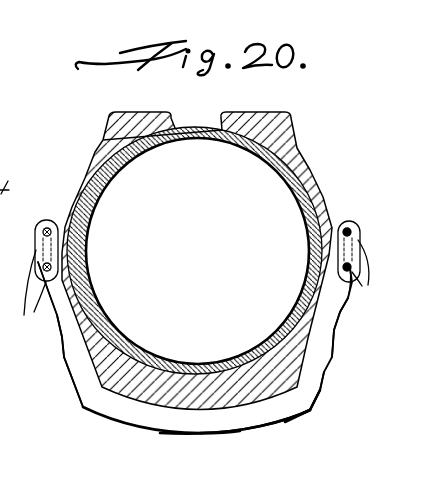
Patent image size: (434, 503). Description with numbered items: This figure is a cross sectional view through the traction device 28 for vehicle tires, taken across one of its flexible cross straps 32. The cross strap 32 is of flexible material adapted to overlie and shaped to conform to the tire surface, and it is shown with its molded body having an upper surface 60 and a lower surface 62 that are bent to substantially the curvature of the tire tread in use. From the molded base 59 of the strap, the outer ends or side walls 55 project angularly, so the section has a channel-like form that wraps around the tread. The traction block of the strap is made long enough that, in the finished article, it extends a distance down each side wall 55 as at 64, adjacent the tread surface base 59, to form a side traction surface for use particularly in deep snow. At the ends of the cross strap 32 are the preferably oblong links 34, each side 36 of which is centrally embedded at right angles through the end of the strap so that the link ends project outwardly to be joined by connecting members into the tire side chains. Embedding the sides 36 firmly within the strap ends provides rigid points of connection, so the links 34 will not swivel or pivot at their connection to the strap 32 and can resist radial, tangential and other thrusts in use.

The traction device 28 is at (310, 410).
The cross strap 32 is at (320, 365).
The link 34 is at (47, 220).
The side of link 36 is at (200, 286).
The side wall 55 is at (63, 337).
The molded base 59 is at (243, 427).
The upper surface 60 is at (204, 410).
The lower surface 62 is at (260, 427).
The side traction surface 64 is at (73, 387).